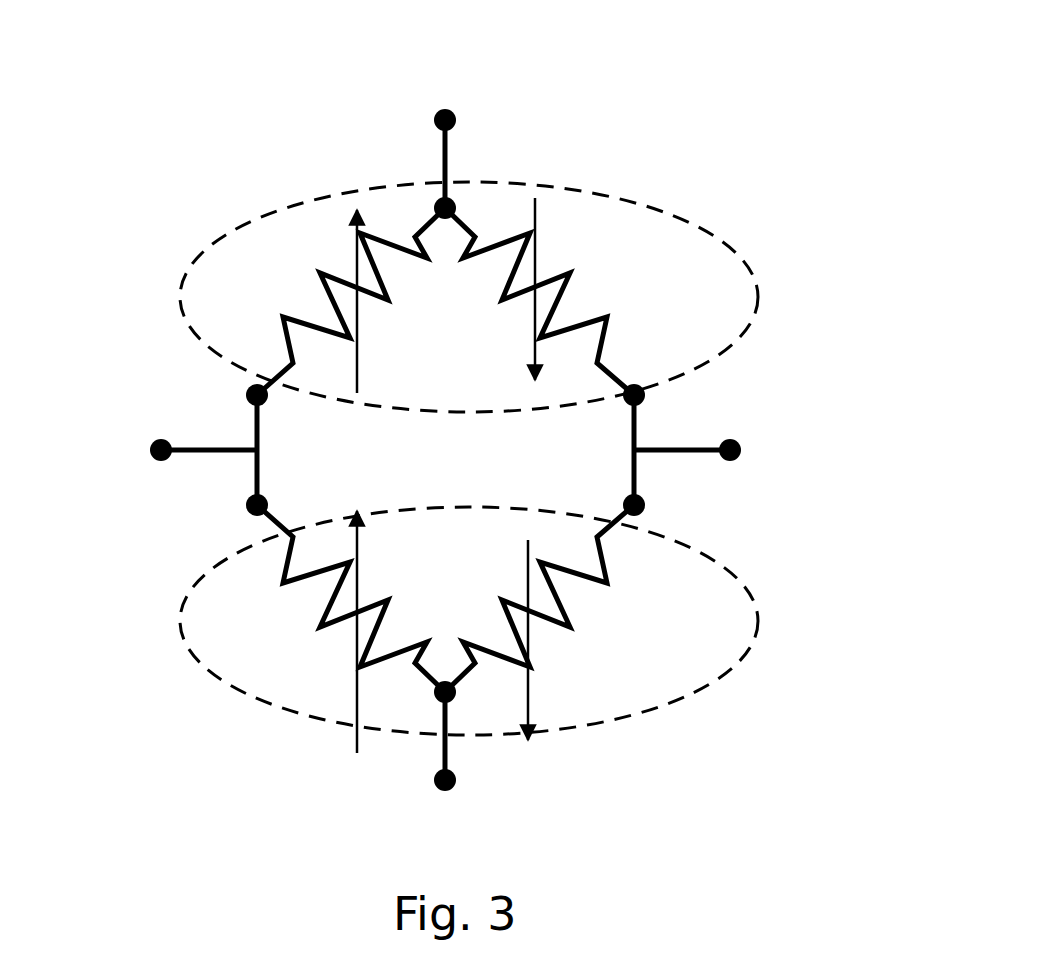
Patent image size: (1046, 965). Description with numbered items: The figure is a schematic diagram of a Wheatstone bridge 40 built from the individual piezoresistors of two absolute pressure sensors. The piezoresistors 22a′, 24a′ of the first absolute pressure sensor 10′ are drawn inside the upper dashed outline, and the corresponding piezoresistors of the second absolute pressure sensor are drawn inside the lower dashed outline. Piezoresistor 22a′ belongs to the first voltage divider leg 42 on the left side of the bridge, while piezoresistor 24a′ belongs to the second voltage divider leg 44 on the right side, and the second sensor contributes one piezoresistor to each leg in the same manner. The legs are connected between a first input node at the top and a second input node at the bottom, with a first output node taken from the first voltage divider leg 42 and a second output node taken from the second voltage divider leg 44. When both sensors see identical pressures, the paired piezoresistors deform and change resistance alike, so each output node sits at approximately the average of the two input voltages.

The Wheatstone bridge 40 is at (740, 78).
The first voltage divider leg 42 is at (212, 497).
The second voltage divider leg 44 is at (689, 406).
The first absolute pressure sensor 10′ is at (708, 230).
The piezoresistor 22a′ is at (306, 252).
The piezoresistor 24a′ is at (600, 250).